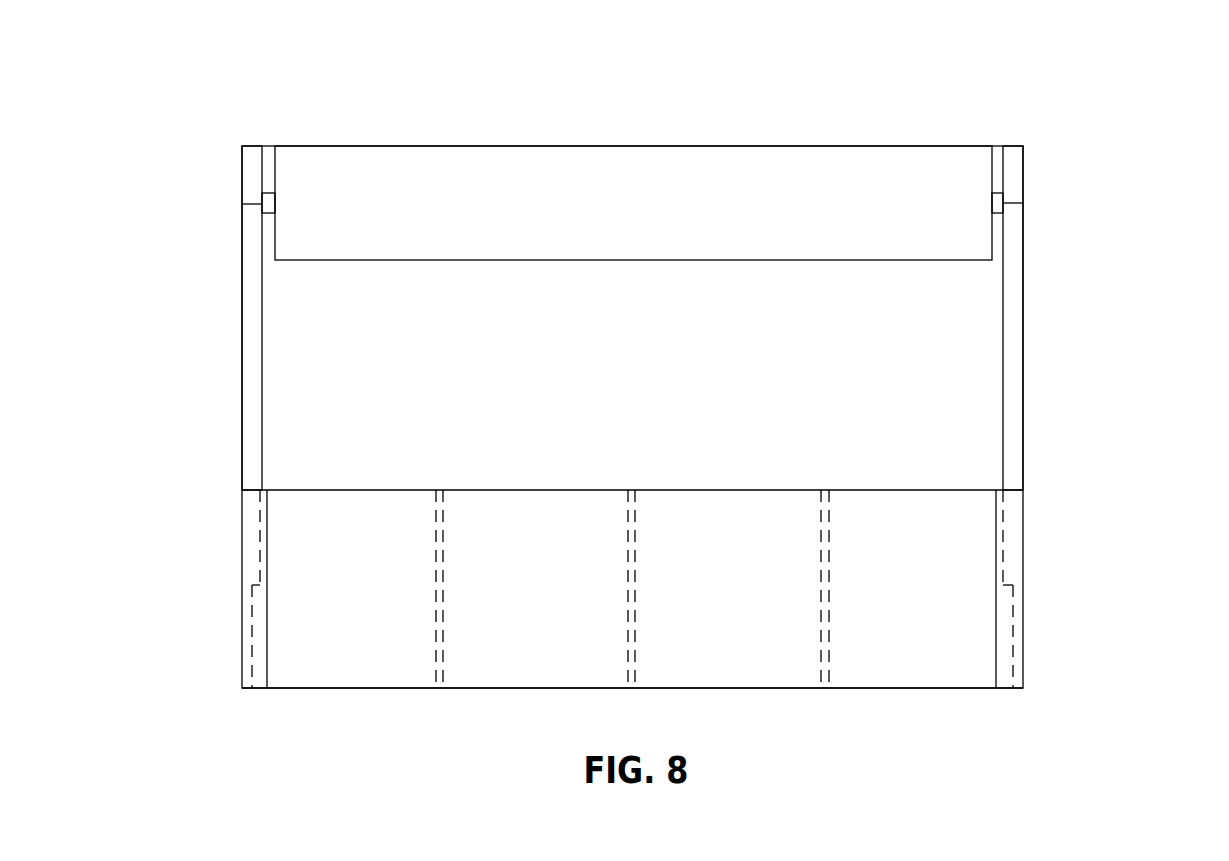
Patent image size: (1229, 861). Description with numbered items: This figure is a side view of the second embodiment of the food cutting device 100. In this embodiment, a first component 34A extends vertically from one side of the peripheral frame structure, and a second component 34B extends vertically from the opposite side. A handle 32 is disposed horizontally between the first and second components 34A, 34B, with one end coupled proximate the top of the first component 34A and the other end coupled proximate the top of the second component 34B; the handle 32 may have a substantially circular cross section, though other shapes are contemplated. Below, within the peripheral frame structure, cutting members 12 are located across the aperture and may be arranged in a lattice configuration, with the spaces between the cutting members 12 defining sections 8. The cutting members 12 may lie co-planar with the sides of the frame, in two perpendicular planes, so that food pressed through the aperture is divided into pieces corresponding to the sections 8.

The food cutting device 100 is at (1187, 68).
The handle 32 is at (683, 140).
The first component 34A is at (236, 378).
The second component 34B is at (1026, 382).
The sections 8 is at (356, 647).
The cutting member 12 is at (840, 641).